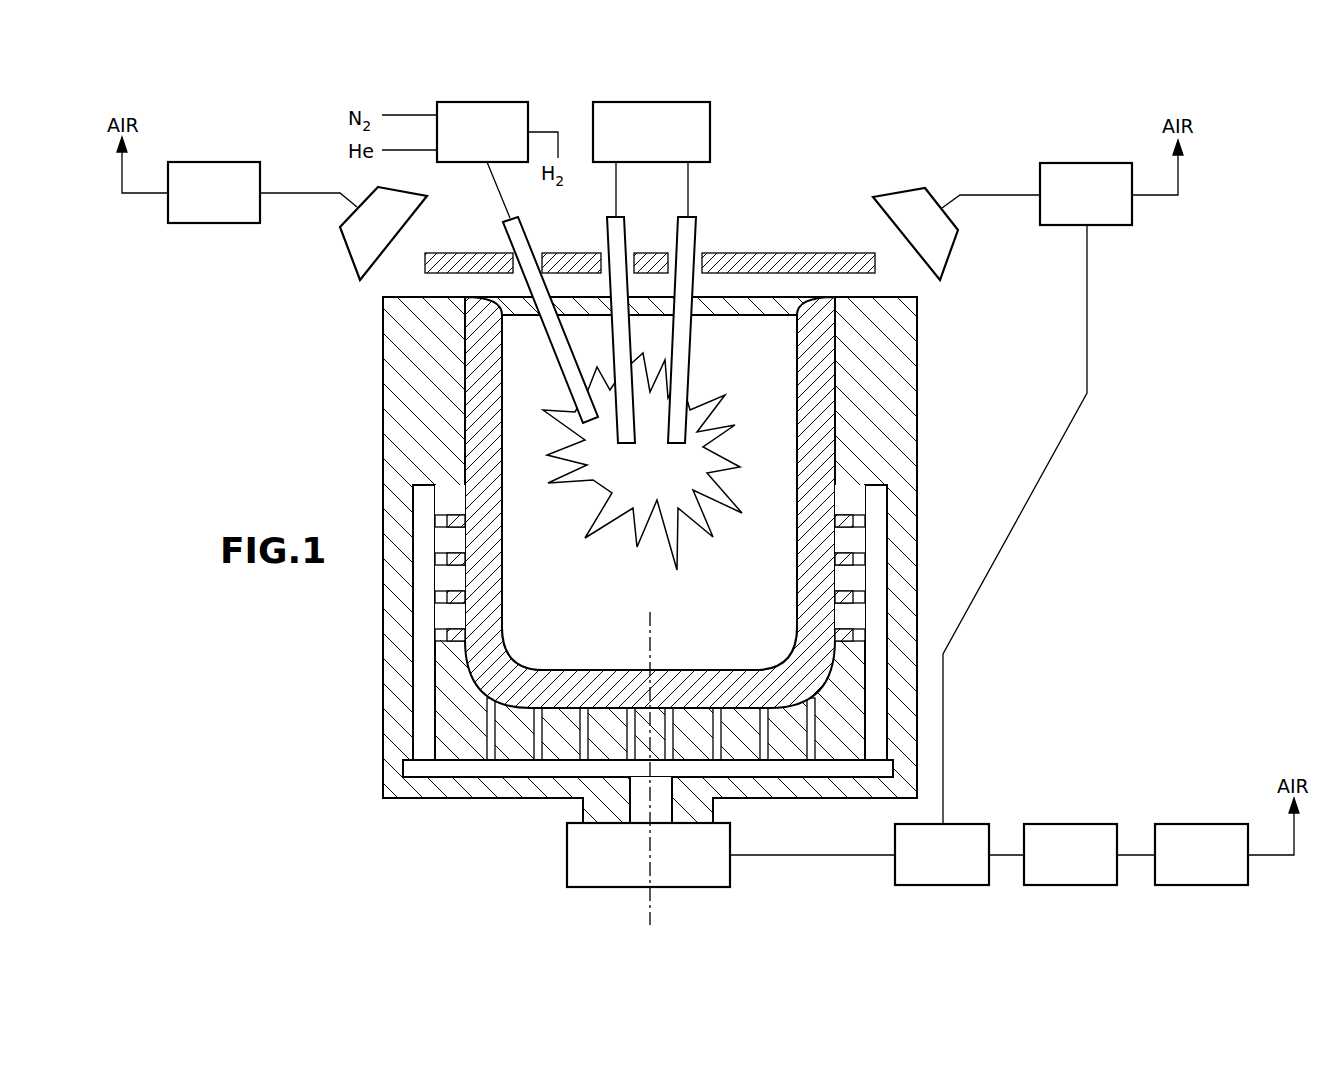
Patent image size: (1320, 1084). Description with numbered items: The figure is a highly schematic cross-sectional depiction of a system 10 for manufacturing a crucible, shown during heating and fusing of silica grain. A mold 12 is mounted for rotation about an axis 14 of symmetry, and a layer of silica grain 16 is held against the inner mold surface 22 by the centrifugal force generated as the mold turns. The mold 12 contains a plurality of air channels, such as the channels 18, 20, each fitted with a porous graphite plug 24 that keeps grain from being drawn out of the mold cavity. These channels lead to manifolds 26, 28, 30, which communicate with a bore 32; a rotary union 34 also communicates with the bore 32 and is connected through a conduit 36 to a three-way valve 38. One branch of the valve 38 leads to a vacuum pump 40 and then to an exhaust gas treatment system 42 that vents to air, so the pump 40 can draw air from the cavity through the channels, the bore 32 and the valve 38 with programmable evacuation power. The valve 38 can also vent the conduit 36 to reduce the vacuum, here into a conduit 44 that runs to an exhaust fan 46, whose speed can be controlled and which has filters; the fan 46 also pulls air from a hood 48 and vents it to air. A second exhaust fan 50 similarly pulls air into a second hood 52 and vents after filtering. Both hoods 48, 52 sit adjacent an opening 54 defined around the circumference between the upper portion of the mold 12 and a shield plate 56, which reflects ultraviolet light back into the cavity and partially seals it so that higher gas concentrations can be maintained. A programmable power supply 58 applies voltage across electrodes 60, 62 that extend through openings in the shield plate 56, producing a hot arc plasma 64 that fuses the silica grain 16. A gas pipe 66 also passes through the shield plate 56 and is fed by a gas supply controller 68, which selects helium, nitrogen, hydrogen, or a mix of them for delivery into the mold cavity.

The system 10 is at (325, 834).
The mold 12 is at (917, 375).
The axis 14 is at (648, 908).
The silica grain 16 is at (502, 575).
The air channel 18 is at (793, 750).
The air channel 20 is at (855, 595).
The inner mold surface 22 is at (832, 407).
The porous graphite plug 24 is at (852, 545).
The manifold 26 is at (413, 583).
The manifold 28 is at (450, 770).
The manifold 30 is at (890, 510).
The bore 32 is at (658, 813).
The rotary union 34 is at (567, 855).
The conduit 36 is at (812, 858).
The three-way valve 38 is at (928, 867).
The vacuum pump 40 is at (1056, 867).
The exhaust gas treatment system 42 is at (1187, 867).
The conduit 44 is at (1087, 317).
The exhaust fan 46 is at (1072, 206).
The hood 48 is at (900, 191).
The second exhaust fan 50 is at (200, 205).
The second hood 52 is at (347, 257).
The opening 54 is at (455, 284).
The shield plate 56 is at (812, 253).
The programmable power supply 58 is at (636, 143).
The electrode 60 is at (607, 232).
The electrode 62 is at (697, 232).
The hot arc plasma 64 is at (635, 549).
The gas pipe 66 is at (505, 236).
The gas supply controller 68 is at (468, 143).